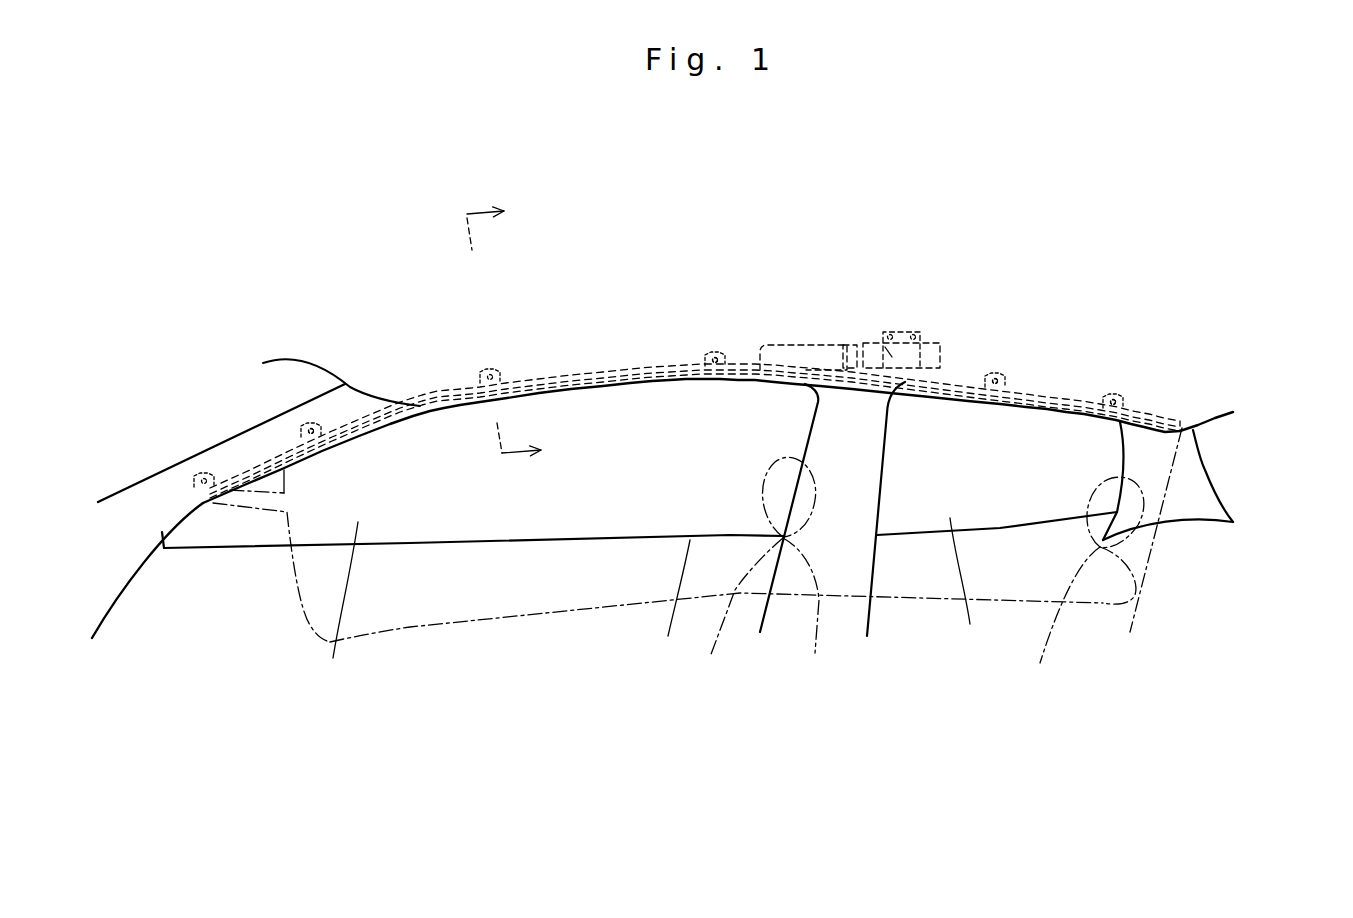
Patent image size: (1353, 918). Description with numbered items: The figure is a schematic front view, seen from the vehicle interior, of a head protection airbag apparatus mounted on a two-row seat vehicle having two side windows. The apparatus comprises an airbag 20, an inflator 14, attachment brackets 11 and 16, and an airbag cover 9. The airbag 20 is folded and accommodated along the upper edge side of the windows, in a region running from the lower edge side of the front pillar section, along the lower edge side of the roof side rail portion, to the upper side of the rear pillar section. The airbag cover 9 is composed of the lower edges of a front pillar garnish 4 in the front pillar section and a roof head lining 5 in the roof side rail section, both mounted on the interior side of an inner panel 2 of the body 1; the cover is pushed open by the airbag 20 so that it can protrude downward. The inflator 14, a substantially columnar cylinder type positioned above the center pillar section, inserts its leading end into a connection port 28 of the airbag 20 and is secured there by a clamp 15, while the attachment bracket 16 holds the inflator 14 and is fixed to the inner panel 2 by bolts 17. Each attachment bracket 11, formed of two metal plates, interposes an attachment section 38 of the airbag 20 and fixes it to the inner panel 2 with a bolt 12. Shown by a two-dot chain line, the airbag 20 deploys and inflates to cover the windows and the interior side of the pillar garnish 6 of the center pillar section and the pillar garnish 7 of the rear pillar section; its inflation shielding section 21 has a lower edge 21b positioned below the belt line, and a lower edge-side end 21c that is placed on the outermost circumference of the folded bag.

The body 1 is at (604, 570).
The inner panel 2 is at (553, 378).
The front pillar garnish 4 is at (153, 520).
The roof head lining 5 is at (610, 366).
The pillar garnish 6 is at (820, 443).
The pillar garnish 7 is at (1202, 493).
The airbag cover 9 is at (200, 510).
The attachment bracket 11 is at (480, 372).
The bolt 12 is at (491, 370).
The inflator 14 is at (938, 332).
The clamp 15 is at (848, 354).
The attachment bracket 16 is at (882, 343).
The bolt 17 is at (893, 333).
The airbag 20 is at (578, 615).
The inflation shielding section 21 is at (557, 392).
The lower edge 21b is at (455, 615).
The lower edge-side end 21c is at (455, 615).
The connection port 28 is at (806, 354).
The attachment section 38 is at (719, 354).